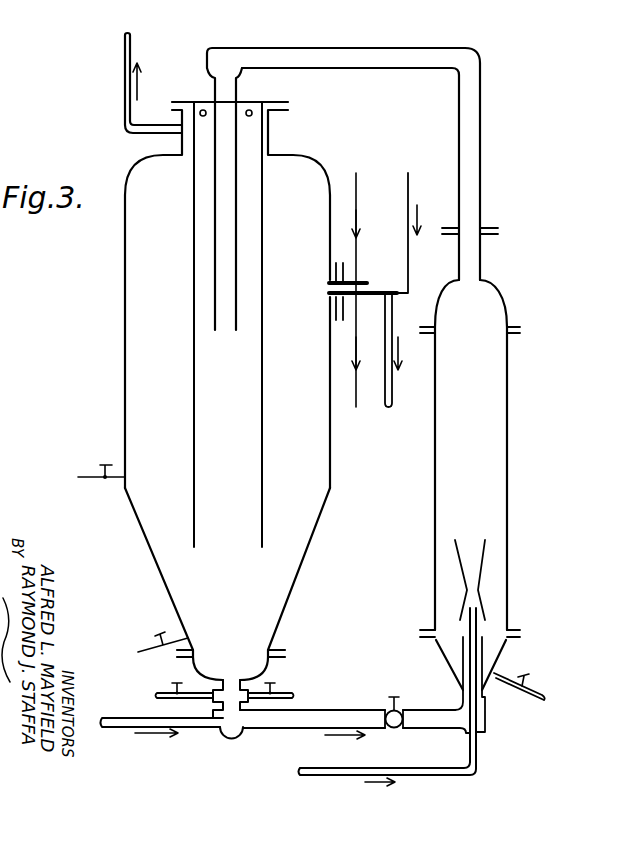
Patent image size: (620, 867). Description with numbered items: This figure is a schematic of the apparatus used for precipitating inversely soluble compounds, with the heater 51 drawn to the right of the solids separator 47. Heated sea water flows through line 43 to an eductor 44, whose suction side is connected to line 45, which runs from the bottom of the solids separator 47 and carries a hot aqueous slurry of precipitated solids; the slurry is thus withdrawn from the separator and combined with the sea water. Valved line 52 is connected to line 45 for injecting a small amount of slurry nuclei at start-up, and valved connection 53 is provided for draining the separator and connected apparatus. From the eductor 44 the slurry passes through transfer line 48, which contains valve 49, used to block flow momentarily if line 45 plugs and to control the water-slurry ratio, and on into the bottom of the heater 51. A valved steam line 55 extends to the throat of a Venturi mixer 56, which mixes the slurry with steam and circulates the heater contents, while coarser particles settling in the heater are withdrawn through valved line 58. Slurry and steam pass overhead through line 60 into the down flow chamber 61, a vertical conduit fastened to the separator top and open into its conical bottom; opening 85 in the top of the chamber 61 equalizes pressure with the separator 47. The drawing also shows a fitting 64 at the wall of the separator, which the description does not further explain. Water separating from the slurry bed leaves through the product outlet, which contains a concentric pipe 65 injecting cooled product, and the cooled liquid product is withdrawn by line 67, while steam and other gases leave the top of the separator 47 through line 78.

The line 43 is at (130, 718).
The eductor 44 is at (230, 738).
The line 45 is at (255, 684).
The solids separator 47 is at (126, 403).
The transfer line 48 is at (363, 710).
The valve 49 is at (400, 706).
The heater 51 is at (507, 362).
The valved line 52 is at (187, 692).
The valved connection 53 is at (292, 697).
The valved steam line 55 is at (477, 752).
The Venturi mixer 56 is at (487, 560).
The valved line 58 is at (532, 690).
The line 60 is at (382, 48).
The down flow chamber 61 is at (193, 363).
The distributor plate 64 is at (365, 292).
The concentric pipe 65 is at (410, 190).
The line 67 is at (393, 312).
The line 78 is at (125, 50).
The opening 85 is at (205, 116).